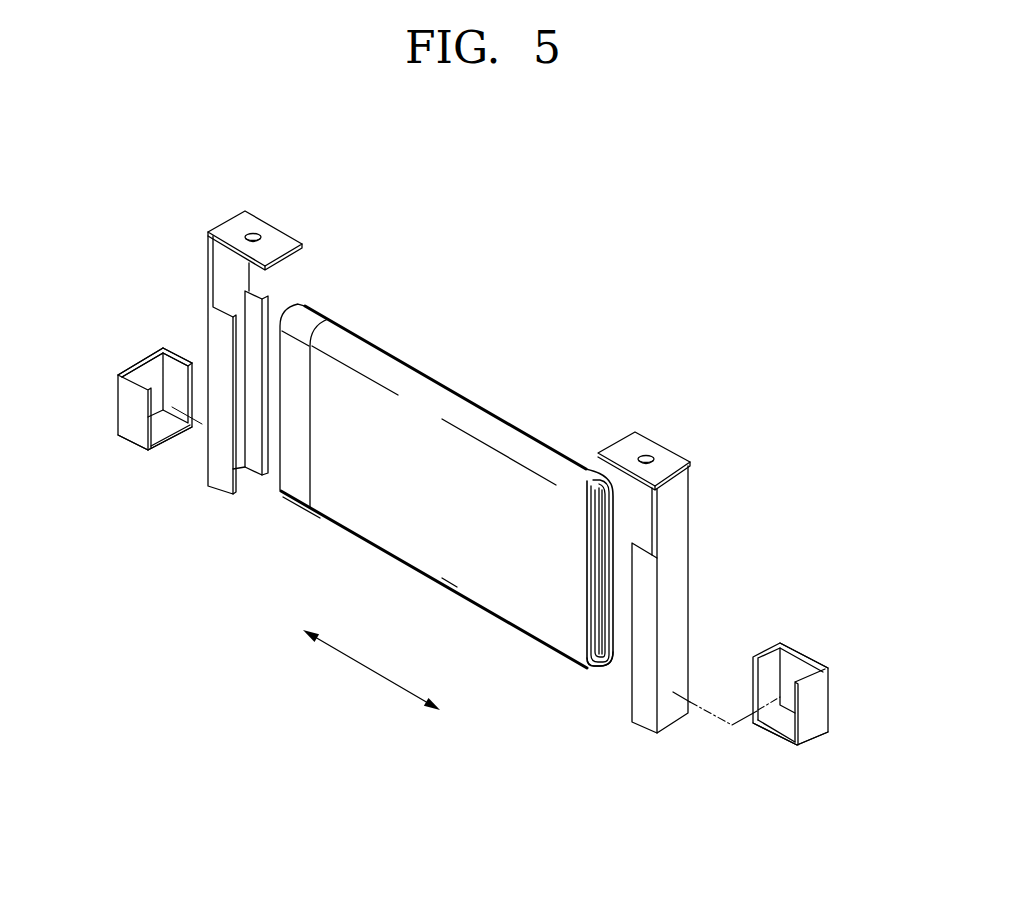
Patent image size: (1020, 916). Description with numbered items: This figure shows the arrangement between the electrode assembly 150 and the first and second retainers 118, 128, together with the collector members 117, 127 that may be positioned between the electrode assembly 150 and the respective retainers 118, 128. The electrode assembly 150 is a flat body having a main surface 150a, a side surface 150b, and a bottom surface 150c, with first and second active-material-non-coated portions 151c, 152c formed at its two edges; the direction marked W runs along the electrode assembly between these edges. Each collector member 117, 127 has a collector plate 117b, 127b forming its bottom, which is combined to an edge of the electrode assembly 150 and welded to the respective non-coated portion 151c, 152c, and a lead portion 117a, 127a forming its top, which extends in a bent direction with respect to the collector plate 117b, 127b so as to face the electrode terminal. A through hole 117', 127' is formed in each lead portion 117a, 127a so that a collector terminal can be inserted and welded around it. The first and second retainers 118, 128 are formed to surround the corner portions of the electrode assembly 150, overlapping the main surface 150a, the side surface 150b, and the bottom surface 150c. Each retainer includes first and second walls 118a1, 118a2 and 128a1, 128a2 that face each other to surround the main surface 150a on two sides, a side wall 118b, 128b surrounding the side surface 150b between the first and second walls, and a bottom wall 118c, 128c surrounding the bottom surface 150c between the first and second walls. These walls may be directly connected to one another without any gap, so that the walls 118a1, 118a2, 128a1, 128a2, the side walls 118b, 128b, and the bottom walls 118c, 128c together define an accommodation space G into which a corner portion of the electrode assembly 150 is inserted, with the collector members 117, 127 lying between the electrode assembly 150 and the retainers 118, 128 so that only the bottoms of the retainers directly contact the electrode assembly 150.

The collector member 117 is at (715, 574).
The through hole 117' is at (701, 439).
The lead portion 117a is at (668, 469).
The collector plate 117b is at (677, 531).
The first retainer 118 is at (833, 638).
The first wall 118a1 is at (819, 707).
The second wall 118a2 is at (754, 688).
The side wall 118b is at (802, 652).
The bottom wall 118c is at (777, 734).
The collector member 127 is at (191, 330).
The through hole 127' is at (190, 204).
The lead portion 127a is at (227, 230).
The collector plate 127b is at (210, 259).
The second retainer 128 is at (128, 338).
The first wall 128a1 is at (128, 436).
The second wall 128a2 is at (179, 351).
The side wall 128b is at (121, 371).
The bottom wall 128c is at (168, 443).
The electrode assembly 150 is at (455, 352).
The main surface 150a is at (428, 558).
The side surface 150b is at (603, 668).
The bottom surface 150c is at (575, 660).
The first active-material-non-coated portion 151c is at (582, 470).
The second active-material-non-coated portion 152c is at (306, 318).
The accommodation space G is at (784, 665).
The width direction W is at (371, 670).